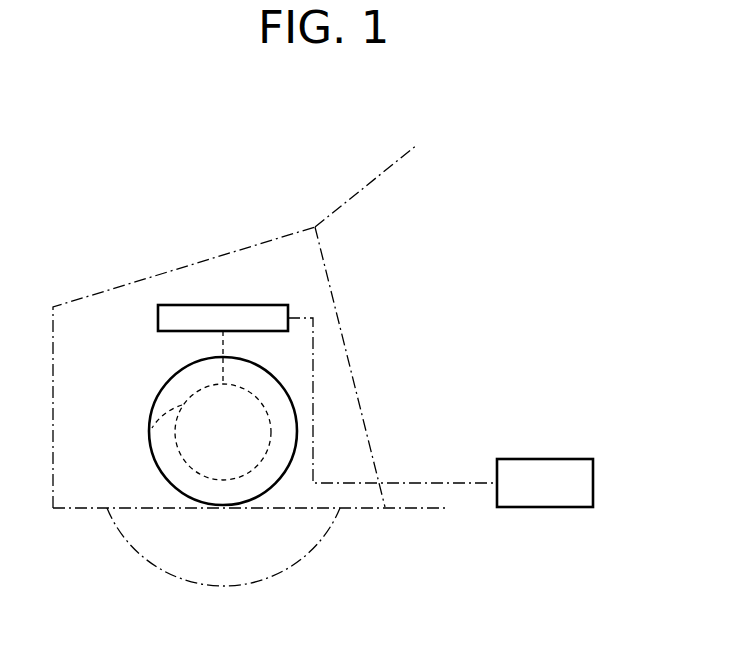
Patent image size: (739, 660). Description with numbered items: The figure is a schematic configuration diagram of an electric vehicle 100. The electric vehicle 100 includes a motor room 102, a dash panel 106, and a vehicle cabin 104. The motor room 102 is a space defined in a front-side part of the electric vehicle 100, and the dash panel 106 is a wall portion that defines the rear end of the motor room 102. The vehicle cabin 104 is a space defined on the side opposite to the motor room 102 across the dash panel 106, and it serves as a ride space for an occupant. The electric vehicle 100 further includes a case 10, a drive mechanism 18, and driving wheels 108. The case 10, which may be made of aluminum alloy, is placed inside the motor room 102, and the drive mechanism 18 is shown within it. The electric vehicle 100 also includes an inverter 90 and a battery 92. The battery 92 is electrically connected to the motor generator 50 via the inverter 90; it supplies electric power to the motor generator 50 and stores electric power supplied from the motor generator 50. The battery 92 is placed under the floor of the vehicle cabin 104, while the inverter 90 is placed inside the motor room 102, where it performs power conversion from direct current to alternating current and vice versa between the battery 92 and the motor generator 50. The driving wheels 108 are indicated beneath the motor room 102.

The electric vehicle 100 is at (331, 152).
The motor room 102 is at (109, 305).
The vehicle cabin 104 is at (380, 182).
The dash panel 106 is at (342, 328).
The driving wheels 108 is at (215, 585).
The case 10 is at (172, 384).
The drive mechanism 18 is at (180, 460).
The motor generator 50 is at (151, 428).
The inverter 90 is at (223, 305).
The battery 92 is at (545, 459).